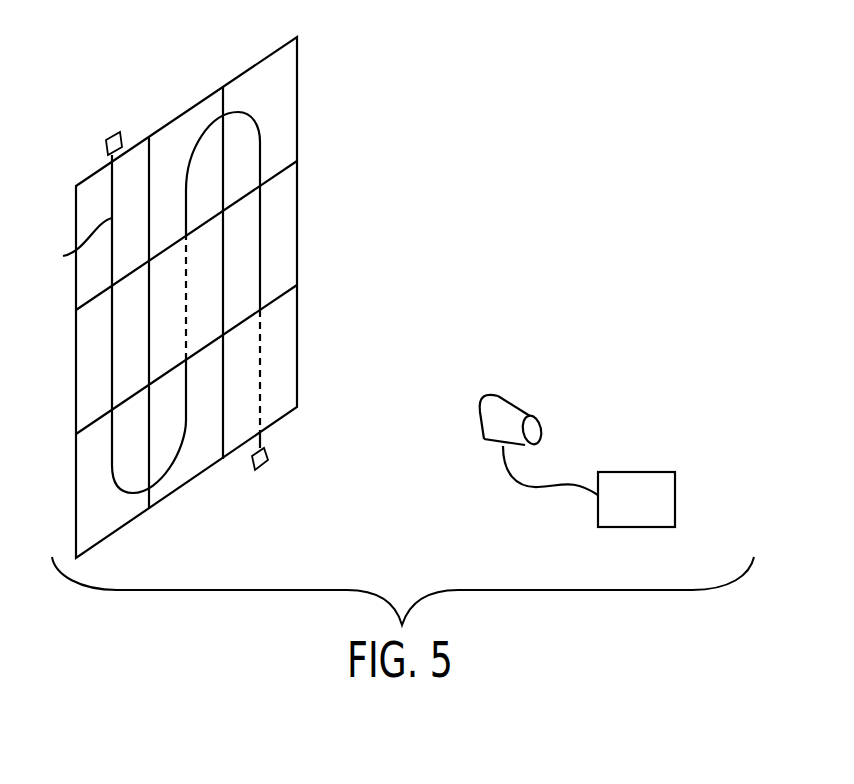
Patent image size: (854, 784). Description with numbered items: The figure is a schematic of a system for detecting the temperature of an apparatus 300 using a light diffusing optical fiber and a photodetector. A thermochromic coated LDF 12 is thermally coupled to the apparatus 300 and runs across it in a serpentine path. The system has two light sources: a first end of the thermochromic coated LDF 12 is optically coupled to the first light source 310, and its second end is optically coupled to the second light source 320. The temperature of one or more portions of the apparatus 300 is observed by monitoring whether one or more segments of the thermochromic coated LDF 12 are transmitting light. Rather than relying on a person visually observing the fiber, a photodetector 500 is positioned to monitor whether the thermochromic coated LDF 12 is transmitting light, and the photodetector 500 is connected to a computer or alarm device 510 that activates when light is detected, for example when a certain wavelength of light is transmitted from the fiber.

The thermochromic coated LDF 12 is at (151, 302).
The apparatus 300 is at (313, 135).
The light source 310 is at (112, 133).
The second light source 320 is at (267, 457).
The photodetector 500 is at (513, 407).
The computer or alarm device 510 is at (653, 512).